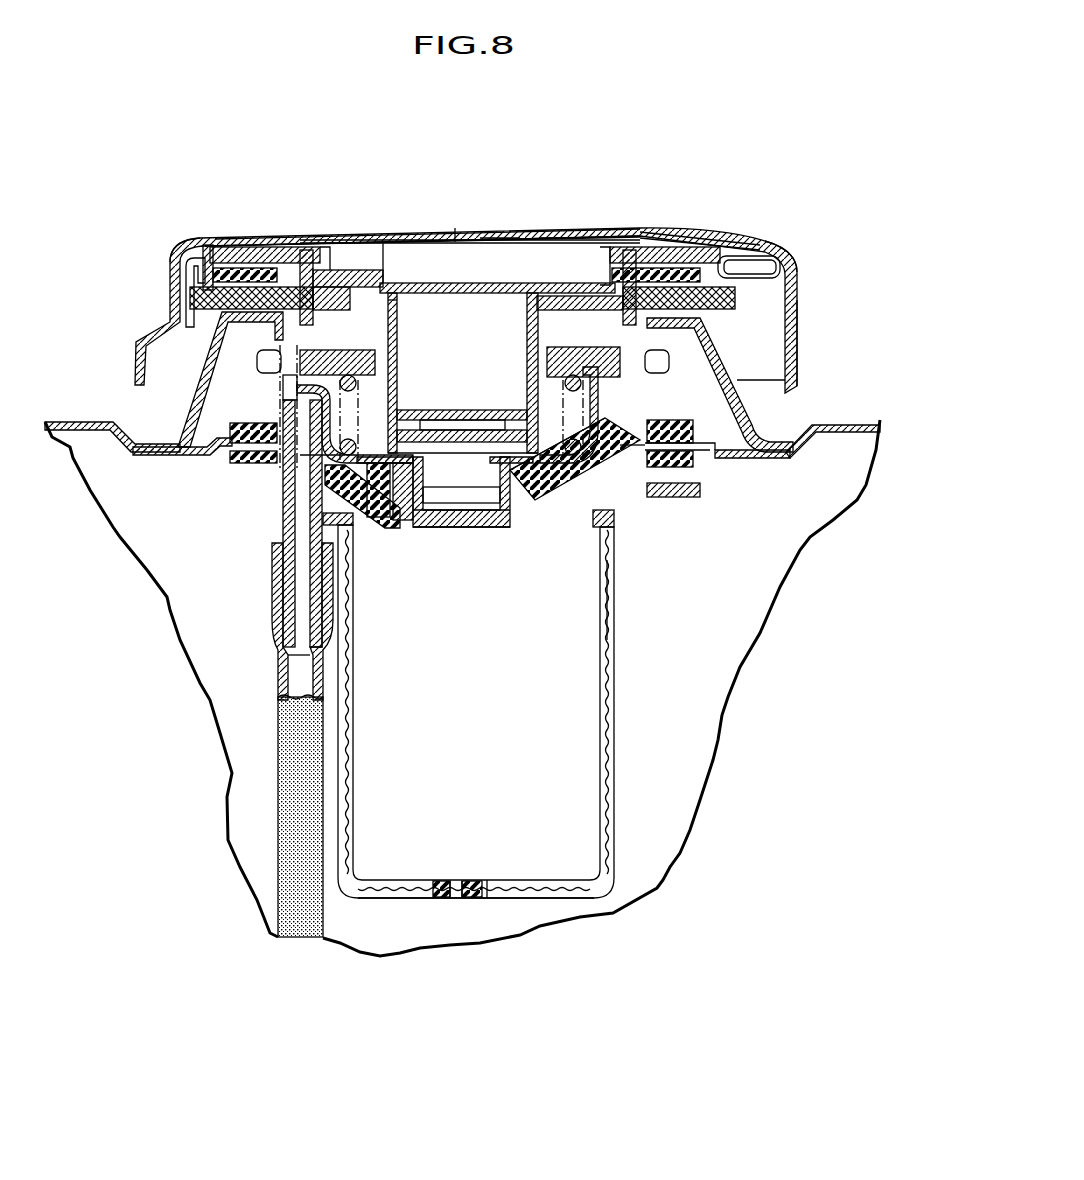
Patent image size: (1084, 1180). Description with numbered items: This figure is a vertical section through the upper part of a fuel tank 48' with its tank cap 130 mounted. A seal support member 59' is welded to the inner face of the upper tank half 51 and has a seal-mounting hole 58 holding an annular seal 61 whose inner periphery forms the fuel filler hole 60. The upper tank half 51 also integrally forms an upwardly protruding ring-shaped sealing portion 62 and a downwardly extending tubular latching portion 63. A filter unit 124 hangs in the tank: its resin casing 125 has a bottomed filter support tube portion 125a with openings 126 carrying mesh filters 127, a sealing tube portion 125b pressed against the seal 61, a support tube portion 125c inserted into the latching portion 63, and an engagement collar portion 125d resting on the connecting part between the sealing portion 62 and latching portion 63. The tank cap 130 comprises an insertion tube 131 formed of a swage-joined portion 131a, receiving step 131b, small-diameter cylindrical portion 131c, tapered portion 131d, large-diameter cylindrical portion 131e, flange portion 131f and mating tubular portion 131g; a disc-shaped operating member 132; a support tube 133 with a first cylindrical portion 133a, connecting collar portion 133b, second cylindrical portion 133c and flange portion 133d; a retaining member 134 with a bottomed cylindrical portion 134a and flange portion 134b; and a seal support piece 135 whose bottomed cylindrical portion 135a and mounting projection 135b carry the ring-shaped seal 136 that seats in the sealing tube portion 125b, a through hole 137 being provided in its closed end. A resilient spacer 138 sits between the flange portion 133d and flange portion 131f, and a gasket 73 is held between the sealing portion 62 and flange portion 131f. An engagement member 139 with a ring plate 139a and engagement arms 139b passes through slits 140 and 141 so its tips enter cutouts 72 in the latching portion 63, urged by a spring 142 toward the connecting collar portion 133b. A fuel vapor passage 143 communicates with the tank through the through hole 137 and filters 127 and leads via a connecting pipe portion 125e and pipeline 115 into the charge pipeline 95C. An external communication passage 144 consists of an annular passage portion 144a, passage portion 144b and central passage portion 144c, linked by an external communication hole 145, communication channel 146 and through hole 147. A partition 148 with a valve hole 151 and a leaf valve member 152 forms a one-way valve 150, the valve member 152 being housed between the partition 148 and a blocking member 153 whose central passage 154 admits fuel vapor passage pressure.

The fuel tank 48' is at (821, 391).
The upper tank half 51 is at (820, 420).
The seal-mounting hole 58 is at (260, 465).
The seal support member 59' is at (716, 476).
The fuel filler hole 60 is at (285, 512).
The seal 61 is at (680, 470).
The sealing portion 62 is at (755, 258).
The latching portion 63 is at (660, 363).
The cutouts 72 is at (680, 330).
The gasket 73 is at (186, 268).
The charge pipeline 95C is at (275, 800).
The pipeline 115 is at (295, 747).
The filter unit 124 is at (515, 902).
The casing 125 is at (625, 530).
The filter support tube portion 125a is at (458, 886).
The sealing tube portion 125b is at (622, 516).
The support tube portion 125c is at (363, 458).
The engagement collar portion 125d is at (260, 275).
The connecting pipe portion 125e is at (283, 543).
The openings 126 is at (435, 886).
The mesh filters 127 is at (390, 898).
The tank cap 130 is at (690, 234).
The insertion tube 131 is at (360, 465).
The swage-joined portion 131a is at (430, 540).
The receiving step 131b is at (560, 510).
The small-diameter cylindrical portion 131c is at (620, 450).
The tapered portion 131d is at (548, 350).
The large-diameter cylindrical portion 131e is at (548, 283).
The flange portion 131f is at (640, 285).
The mating tubular portion 131g is at (790, 320).
The operating member 132 is at (430, 230).
The support tube 133 is at (345, 283).
The first cylindrical portion 133a is at (384, 316).
The connecting collar portion 133b is at (370, 250).
The second cylindrical portion 133c is at (590, 262).
The flange portion 133d is at (212, 262).
The retaining member 134 is at (610, 283).
The bottomed cylindrical portion 134a is at (510, 269).
The flange portion 134b is at (700, 290).
The seal support piece 135 is at (458, 540).
The bottomed cylindrical portion 135a is at (470, 530).
The mounting projection 135b is at (505, 527).
The seal 136 is at (385, 517).
The through hole 137 is at (425, 522).
The spacer 138 is at (200, 240).
The engagement member 139 is at (215, 320).
The ring plate 139a is at (540, 360).
The engagement arms 139b is at (205, 390).
The slits 140 is at (345, 390).
The slits 141 is at (270, 375).
The spring 142 is at (392, 360).
The fuel vapor passage 143 is at (185, 455).
The external communication passage 144 is at (445, 276).
The annular passage portion 144a is at (790, 248).
The passage portion 144b is at (520, 194).
The central passage portion 144c is at (425, 265).
The external communication hole 145 is at (790, 270).
The communication channel 146 is at (745, 262).
The through hole 147 is at (455, 235).
The partition 148 is at (500, 410).
The one-way valve 150 is at (505, 408).
The valve hole 151 is at (455, 410).
The leaf valve member 152 is at (470, 510).
The blocking member 153 is at (610, 593).
The passage 154 is at (445, 435).